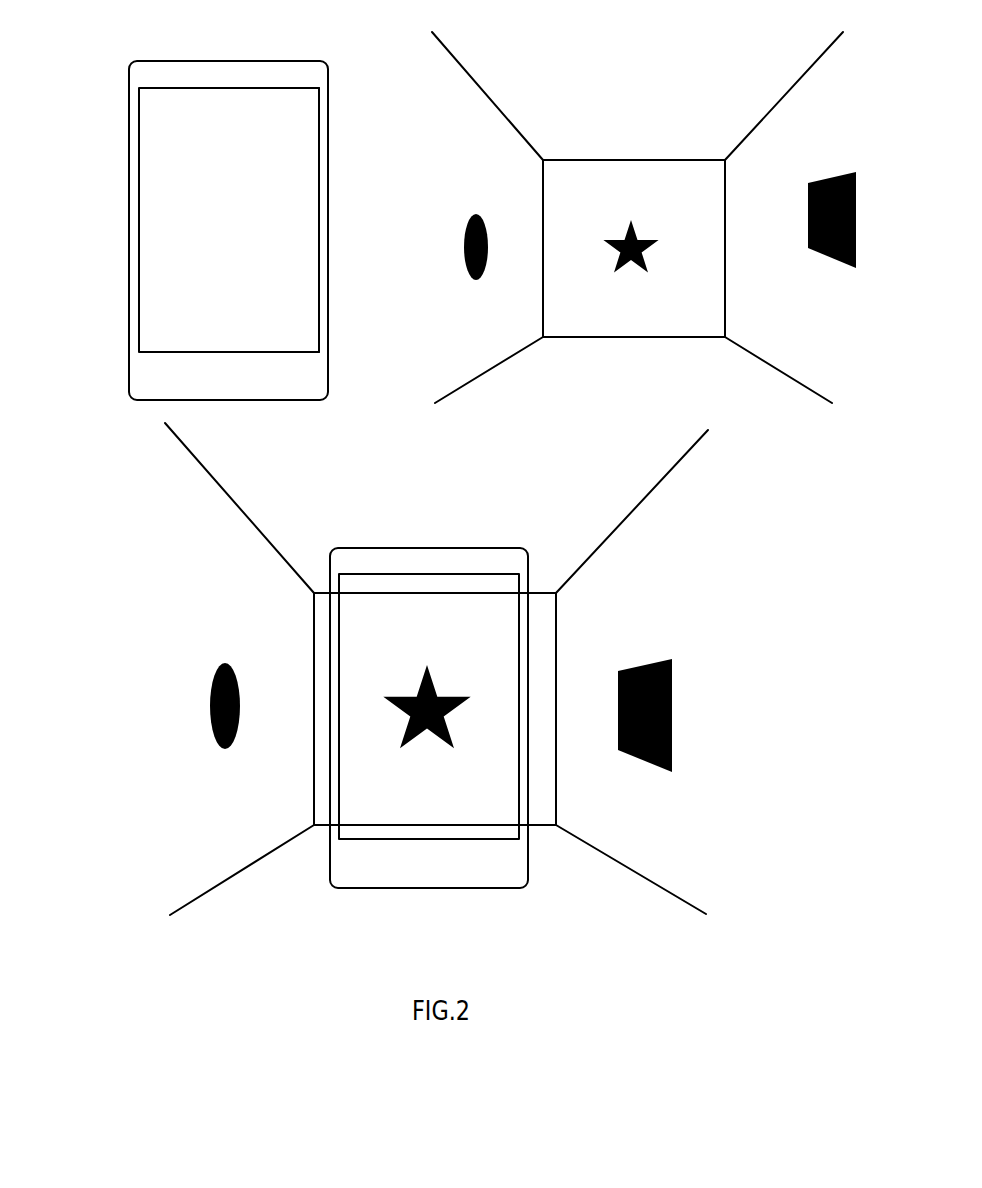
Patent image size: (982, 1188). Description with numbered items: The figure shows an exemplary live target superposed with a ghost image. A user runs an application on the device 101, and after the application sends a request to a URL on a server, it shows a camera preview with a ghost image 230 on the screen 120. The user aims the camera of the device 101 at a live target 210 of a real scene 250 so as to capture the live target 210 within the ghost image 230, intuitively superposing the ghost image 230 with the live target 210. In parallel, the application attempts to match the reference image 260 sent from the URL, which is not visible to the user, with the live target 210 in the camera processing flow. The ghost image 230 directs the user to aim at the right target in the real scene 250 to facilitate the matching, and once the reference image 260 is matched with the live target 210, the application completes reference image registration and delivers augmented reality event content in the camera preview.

The device 101 is at (238, 75).
The screen 120 is at (153, 108).
The ghost image 230 is at (287, 160).
The real scene 250 is at (644, 217).
The live target 210 is at (638, 217).
The reference image 260 is at (410, 692).